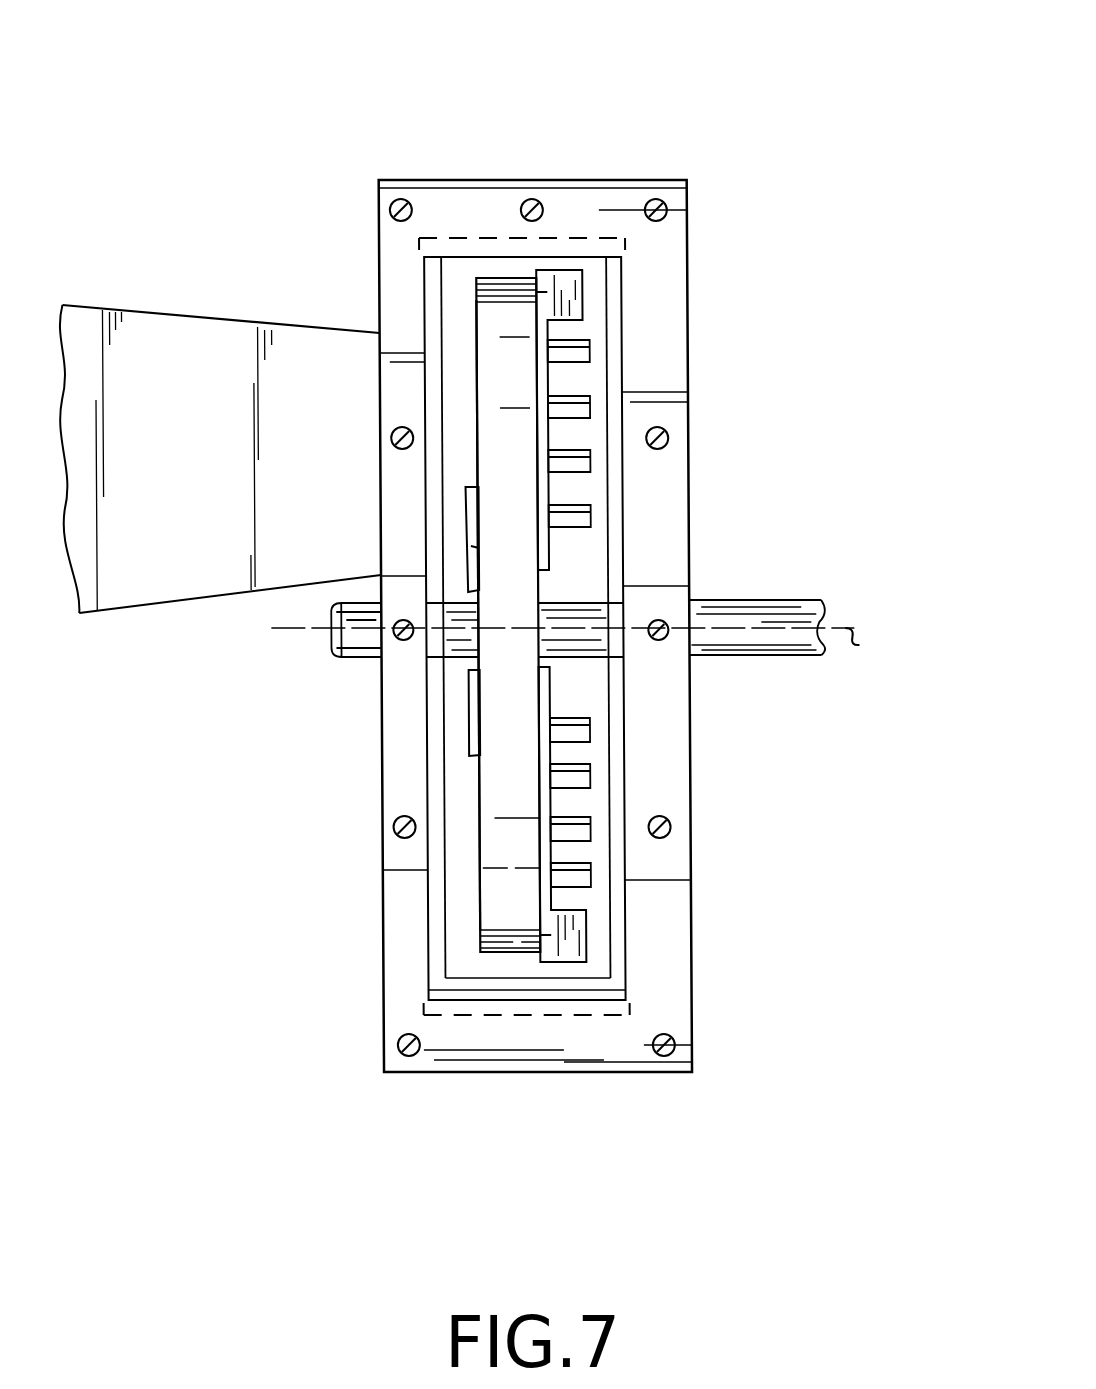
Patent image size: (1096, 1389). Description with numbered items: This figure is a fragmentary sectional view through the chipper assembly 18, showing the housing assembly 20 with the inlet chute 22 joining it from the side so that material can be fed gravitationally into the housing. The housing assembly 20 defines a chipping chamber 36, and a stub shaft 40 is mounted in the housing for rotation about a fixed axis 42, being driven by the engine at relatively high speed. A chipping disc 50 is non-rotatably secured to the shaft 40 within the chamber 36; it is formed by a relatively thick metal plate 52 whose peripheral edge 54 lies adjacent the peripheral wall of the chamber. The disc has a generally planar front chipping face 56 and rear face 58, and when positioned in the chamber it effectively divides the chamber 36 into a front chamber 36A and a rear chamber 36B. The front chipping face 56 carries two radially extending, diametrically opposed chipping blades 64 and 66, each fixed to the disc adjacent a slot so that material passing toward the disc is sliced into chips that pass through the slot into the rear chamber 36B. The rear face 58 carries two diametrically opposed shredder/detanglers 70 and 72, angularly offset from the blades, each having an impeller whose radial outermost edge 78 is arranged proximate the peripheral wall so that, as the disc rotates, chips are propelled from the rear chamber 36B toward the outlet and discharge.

The chipper assembly 18 is at (710, 94).
The housing assembly 20 is at (498, 1118).
The inlet chute 22 is at (122, 587).
The chipping chamber 36 is at (521, 628).
The front chamber 36A is at (458, 775).
The rear chamber 36B is at (597, 685).
The stub shaft 40 is at (770, 615).
The fixed axis 42 is at (593, 638).
The chipping disc 50 is at (410, 527).
The metal plate 52 is at (410, 544).
The peripheral edge 54 is at (490, 277).
The front chipping face 56 is at (470, 388).
The rear face 58 is at (653, 340).
The chipping blade 64 is at (472, 548).
The chipping blade 66 is at (463, 710).
The shredder/detangler 70 is at (555, 852).
The shredder/detangler 72 is at (548, 485).
The radial outermost edge 78 is at (563, 272).